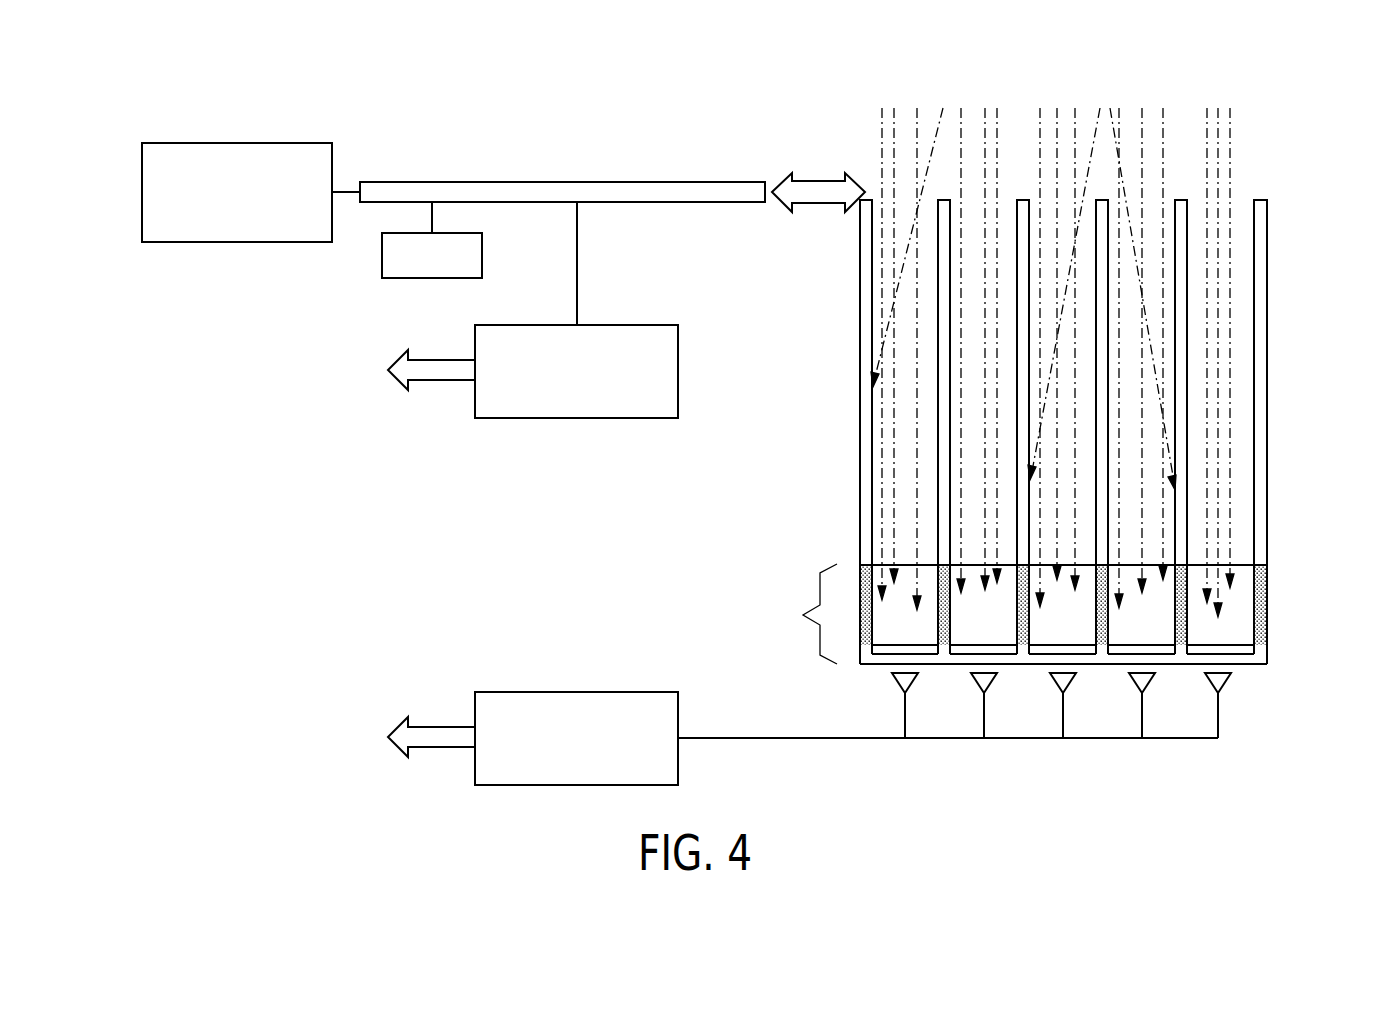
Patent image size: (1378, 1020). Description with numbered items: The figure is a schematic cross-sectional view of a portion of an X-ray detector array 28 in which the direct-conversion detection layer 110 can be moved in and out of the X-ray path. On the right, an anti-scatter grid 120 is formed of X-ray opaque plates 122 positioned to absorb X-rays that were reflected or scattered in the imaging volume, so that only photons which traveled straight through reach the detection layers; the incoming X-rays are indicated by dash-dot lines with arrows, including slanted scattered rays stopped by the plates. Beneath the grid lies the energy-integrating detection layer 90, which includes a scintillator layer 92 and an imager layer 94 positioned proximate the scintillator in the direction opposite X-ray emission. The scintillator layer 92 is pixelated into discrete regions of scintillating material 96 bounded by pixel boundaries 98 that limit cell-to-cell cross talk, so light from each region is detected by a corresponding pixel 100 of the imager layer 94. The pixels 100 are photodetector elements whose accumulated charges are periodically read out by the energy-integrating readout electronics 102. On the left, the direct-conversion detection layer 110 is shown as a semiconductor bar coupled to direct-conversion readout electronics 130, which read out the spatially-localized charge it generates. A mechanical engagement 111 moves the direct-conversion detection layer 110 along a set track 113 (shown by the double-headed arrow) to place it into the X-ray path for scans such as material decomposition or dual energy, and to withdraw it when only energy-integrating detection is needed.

The detector array 28 is at (1260, 85).
The energy-integrating detection layer 90 is at (804, 614).
The scintillator layer 92 is at (1278, 576).
The imager layer 94 is at (1278, 653).
The scintillating material 96 is at (958, 630).
The pixel boundaries 98 is at (1188, 628).
The pixel 100 is at (1123, 648).
The energy-integrating readout electronics 102 is at (575, 690).
The direct-conversion detection layer 110 is at (506, 178).
The mechanical engagement 111 is at (245, 143).
The track 113 is at (432, 280).
The anti-scatter grid 120 is at (1067, 434).
The X-ray opaque plates 122 is at (1268, 220).
The direct-conversion readout electronics 130 is at (680, 372).